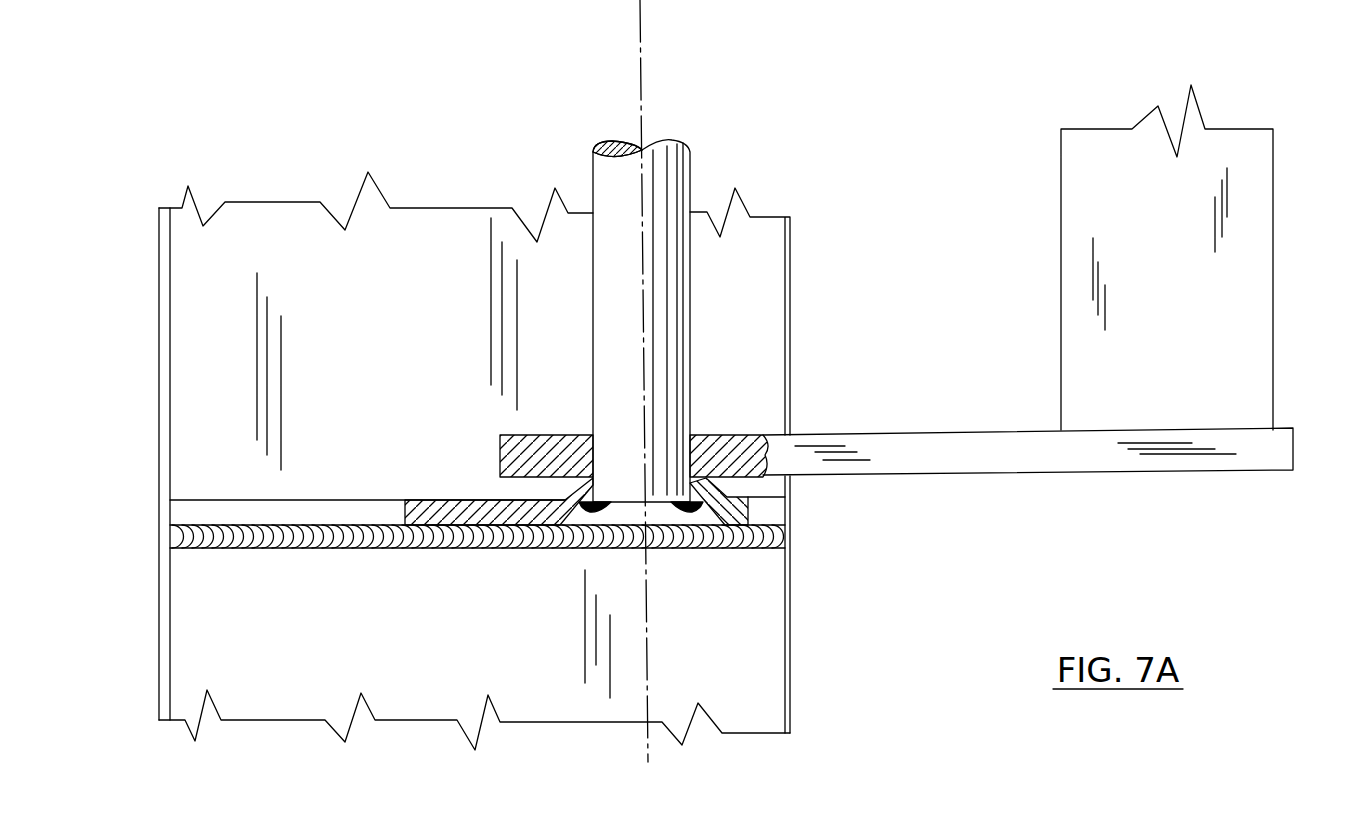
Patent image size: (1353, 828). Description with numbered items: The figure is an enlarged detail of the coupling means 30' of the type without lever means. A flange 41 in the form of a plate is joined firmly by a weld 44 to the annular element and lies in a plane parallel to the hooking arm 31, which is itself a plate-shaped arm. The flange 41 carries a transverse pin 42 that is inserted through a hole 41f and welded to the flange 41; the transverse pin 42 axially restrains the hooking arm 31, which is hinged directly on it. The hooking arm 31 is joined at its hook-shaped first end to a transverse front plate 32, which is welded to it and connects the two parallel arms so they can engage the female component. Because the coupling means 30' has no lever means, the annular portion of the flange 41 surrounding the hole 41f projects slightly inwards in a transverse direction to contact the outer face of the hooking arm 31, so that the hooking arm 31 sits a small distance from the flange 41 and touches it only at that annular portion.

The transverse pin 42 is at (692, 277).
The hooking arm 31 is at (978, 430).
The transverse front plate 32 is at (1213, 322).
The coupling means 30' is at (1043, 362).
The weld 44 is at (342, 549).
The flange 41 is at (483, 510).
The hole 41f is at (684, 493).